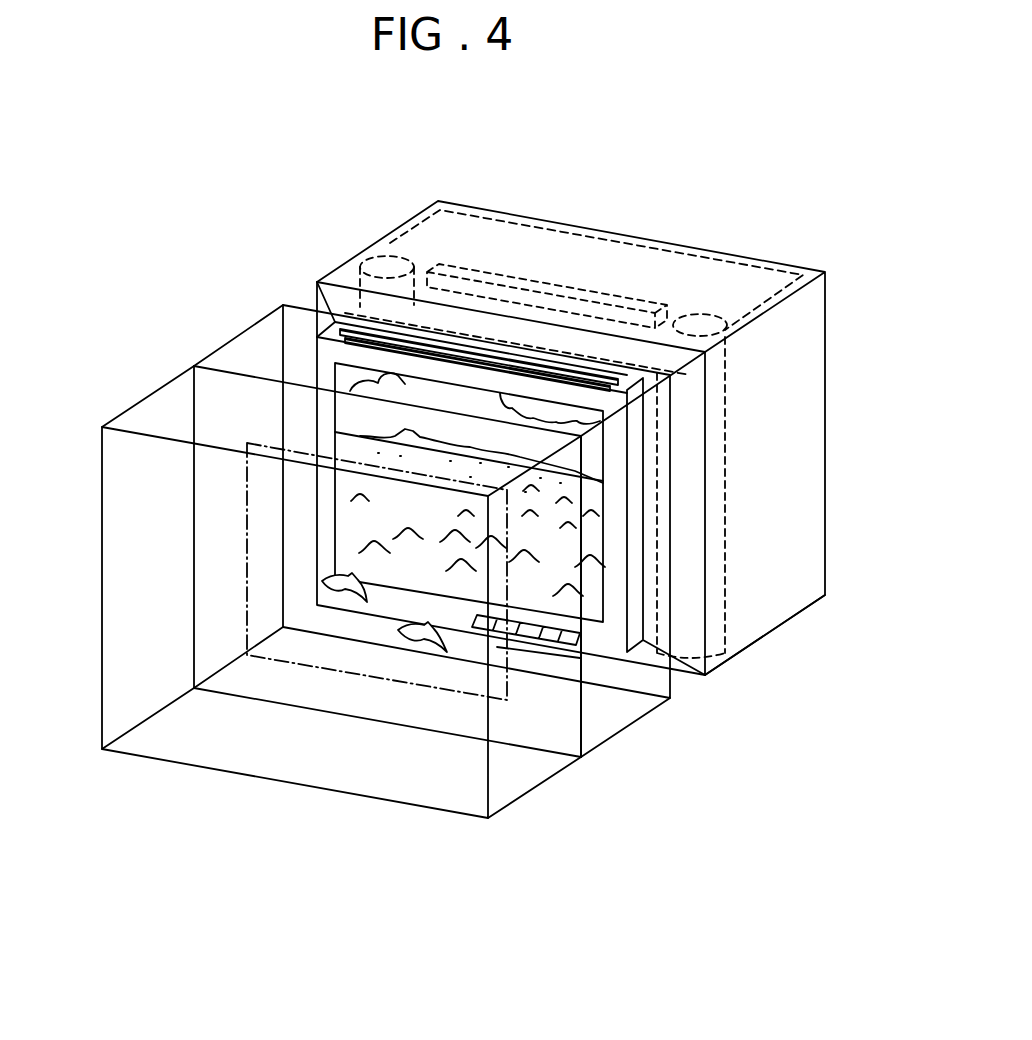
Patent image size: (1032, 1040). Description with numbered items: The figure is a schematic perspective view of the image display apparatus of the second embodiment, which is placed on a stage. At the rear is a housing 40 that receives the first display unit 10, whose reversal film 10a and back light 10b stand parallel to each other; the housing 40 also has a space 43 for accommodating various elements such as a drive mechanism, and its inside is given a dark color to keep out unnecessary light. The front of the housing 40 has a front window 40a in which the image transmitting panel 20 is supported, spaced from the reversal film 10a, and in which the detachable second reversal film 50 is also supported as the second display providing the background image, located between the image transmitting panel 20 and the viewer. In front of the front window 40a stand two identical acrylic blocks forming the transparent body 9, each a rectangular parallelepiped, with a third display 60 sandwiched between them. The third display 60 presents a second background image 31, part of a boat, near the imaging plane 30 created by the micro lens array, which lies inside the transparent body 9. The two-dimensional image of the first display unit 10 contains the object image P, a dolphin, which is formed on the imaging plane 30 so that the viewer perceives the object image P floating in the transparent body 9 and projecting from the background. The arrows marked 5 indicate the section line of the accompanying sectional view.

The transparent body 9 is at (223, 358).
The first display unit 10 is at (547, 157).
The reversal film 10a is at (522, 305).
The back light 10b is at (565, 297).
The image transmitting panel 20 is at (657, 500).
The imaging plane 30 is at (450, 692).
The second background image 31 is at (487, 630).
The housing 40 is at (395, 227).
The front window 40a is at (767, 633).
The space 43 is at (713, 275).
The second reversal film 50 is at (399, 432).
The third display 60 is at (580, 713).
The section line of FIG. 5 is at (133, 617).
The object image P is at (342, 592).